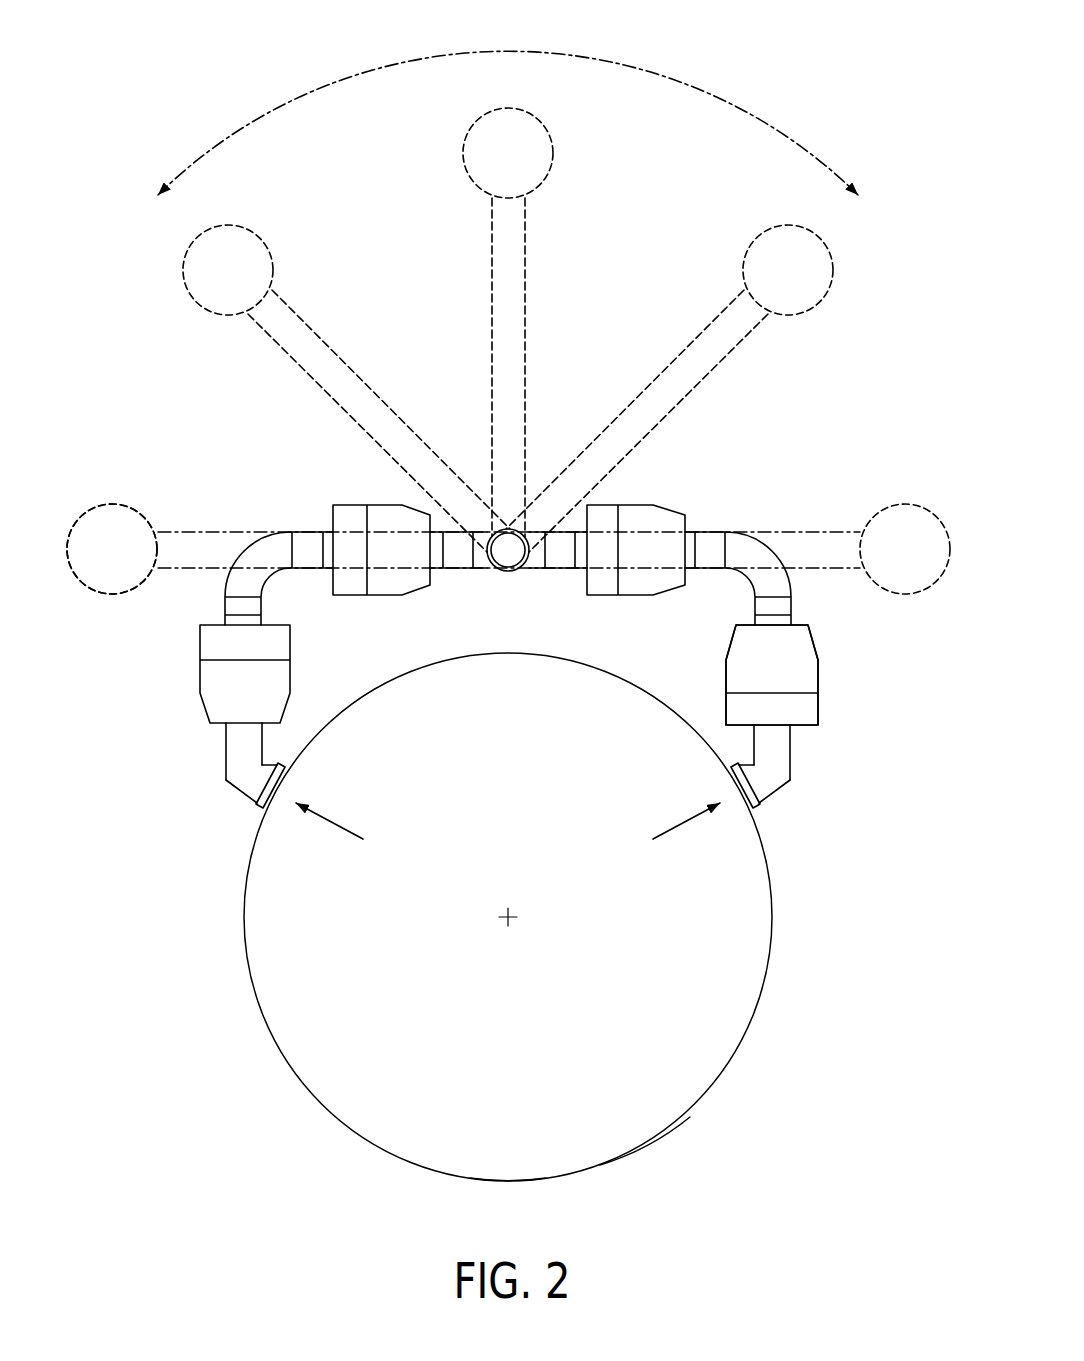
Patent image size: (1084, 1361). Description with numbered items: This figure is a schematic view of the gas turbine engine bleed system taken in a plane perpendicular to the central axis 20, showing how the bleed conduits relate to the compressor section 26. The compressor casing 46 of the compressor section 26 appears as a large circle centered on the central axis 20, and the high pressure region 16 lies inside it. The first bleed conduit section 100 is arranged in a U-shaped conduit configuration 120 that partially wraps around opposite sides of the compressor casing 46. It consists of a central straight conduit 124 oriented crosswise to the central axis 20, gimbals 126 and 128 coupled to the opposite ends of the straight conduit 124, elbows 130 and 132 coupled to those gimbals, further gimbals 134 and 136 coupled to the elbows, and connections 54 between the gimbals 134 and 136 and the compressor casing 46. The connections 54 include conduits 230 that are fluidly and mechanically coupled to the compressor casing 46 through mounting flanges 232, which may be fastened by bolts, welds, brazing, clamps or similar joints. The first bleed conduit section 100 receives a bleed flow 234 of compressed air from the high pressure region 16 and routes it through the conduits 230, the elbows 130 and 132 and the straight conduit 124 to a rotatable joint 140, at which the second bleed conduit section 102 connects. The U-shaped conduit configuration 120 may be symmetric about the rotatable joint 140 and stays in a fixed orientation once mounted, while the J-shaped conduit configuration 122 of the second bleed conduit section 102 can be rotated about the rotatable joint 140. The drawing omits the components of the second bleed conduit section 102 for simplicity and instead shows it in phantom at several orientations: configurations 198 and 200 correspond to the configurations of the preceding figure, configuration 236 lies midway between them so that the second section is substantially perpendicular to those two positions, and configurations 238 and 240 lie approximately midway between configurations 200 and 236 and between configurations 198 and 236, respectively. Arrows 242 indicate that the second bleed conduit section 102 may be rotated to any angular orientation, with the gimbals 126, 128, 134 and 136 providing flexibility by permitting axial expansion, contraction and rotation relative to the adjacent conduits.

The high pressure region 16 is at (402, 1116).
The central axis 20 is at (506, 925).
The compressor section 26 is at (653, 1151).
The compressor casing 46 is at (508, 1183).
The connections 54 is at (213, 757).
The first bleed conduit section 100 is at (838, 723).
The second bleed conduit section 102 is at (168, 610).
The U-shaped conduit configuration 120 is at (766, 482).
The J-shaped conduit configuration 122 is at (135, 597).
The straight conduit 124 is at (557, 563).
The gimbal 126 is at (657, 520).
The gimbal 128 is at (373, 578).
The elbow 130 is at (712, 545).
The elbow 132 is at (305, 547).
The gimbal 134 is at (808, 680).
The gimbal 136 is at (207, 680).
The rotatable joint 140 is at (502, 572).
The bleed conduit configuration 198 is at (864, 479).
The bleed conduit configuration 200 is at (88, 505).
The conduits 230 is at (228, 786).
The mounting flanges 232 is at (262, 813).
The bleed flow 234 is at (333, 822).
The bleed conduit configuration 236 is at (541, 183).
The bleed conduit configuration 238 is at (260, 238).
The bleed conduit configuration 240 is at (821, 302).
The arrows 242 is at (632, 67).